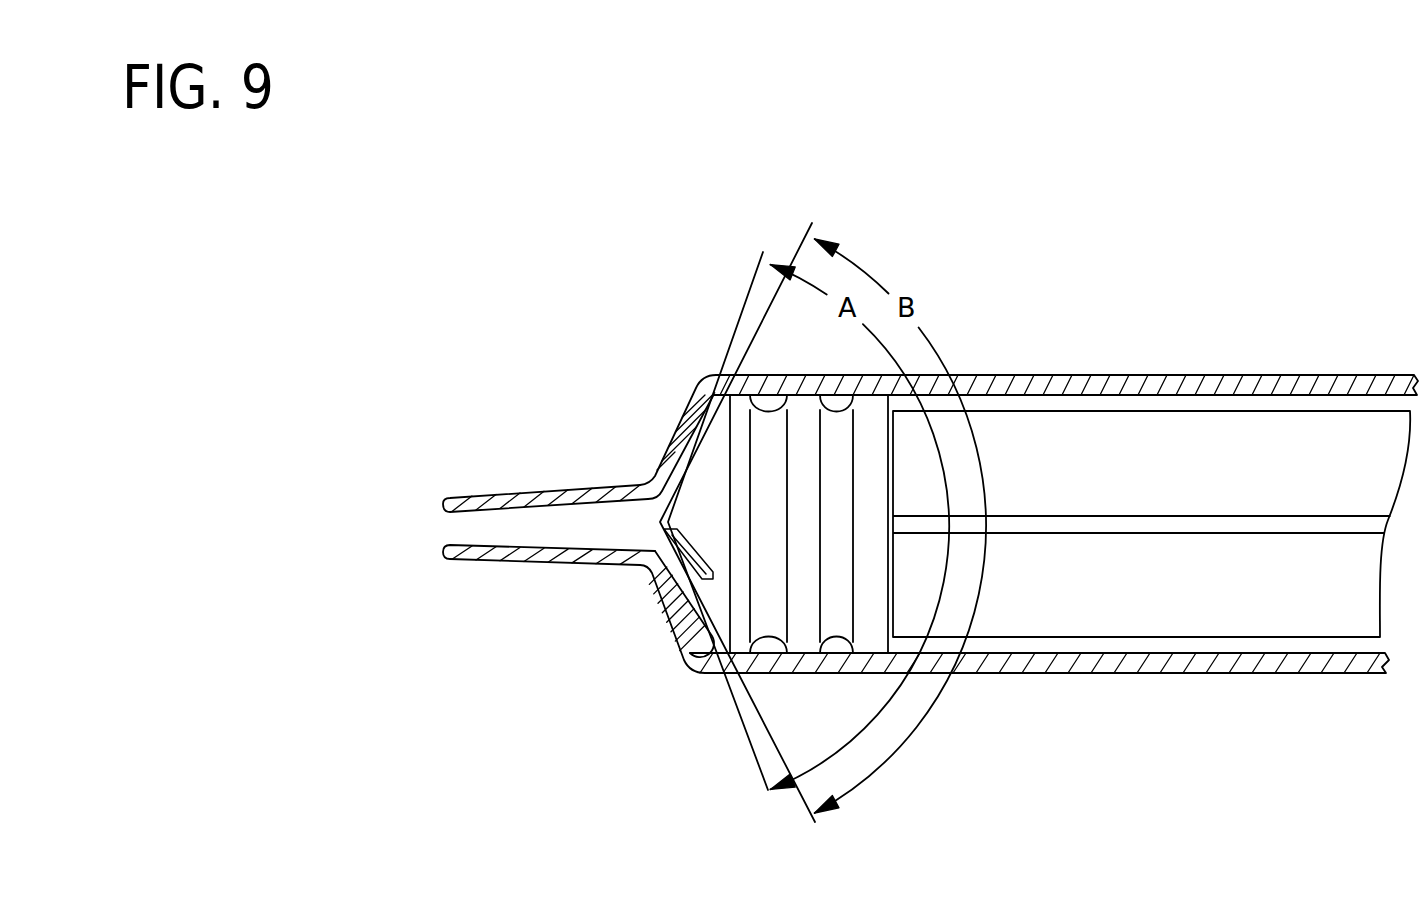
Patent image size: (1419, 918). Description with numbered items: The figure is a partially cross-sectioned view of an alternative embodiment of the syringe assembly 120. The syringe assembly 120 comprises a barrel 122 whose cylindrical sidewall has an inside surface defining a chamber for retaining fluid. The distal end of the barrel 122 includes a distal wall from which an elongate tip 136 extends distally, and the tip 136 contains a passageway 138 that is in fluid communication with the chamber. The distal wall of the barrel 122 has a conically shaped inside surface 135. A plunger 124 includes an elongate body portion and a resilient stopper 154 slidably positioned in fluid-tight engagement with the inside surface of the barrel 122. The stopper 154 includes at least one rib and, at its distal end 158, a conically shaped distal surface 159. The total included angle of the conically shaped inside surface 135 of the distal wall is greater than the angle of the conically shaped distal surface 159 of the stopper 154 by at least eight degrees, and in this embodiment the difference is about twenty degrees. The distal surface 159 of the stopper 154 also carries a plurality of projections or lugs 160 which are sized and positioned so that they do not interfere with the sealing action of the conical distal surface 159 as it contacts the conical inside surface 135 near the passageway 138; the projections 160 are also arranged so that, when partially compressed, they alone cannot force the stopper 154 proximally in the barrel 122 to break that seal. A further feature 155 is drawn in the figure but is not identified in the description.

The syringe assembly 120 is at (1295, 676).
The barrel 122 is at (1107, 373).
The plunger 124 is at (1273, 436).
The conically shaped inside surface 135 is at (718, 385).
The elongate tip 136 is at (460, 556).
The passageway 138 is at (577, 523).
The resilient stopper 154 is at (832, 583).
The insert end gap 155 is at (880, 645).
The distal end 158 is at (712, 507).
The conically shaped distal surface 159 is at (682, 670).
The projections or lugs 160 is at (686, 494).